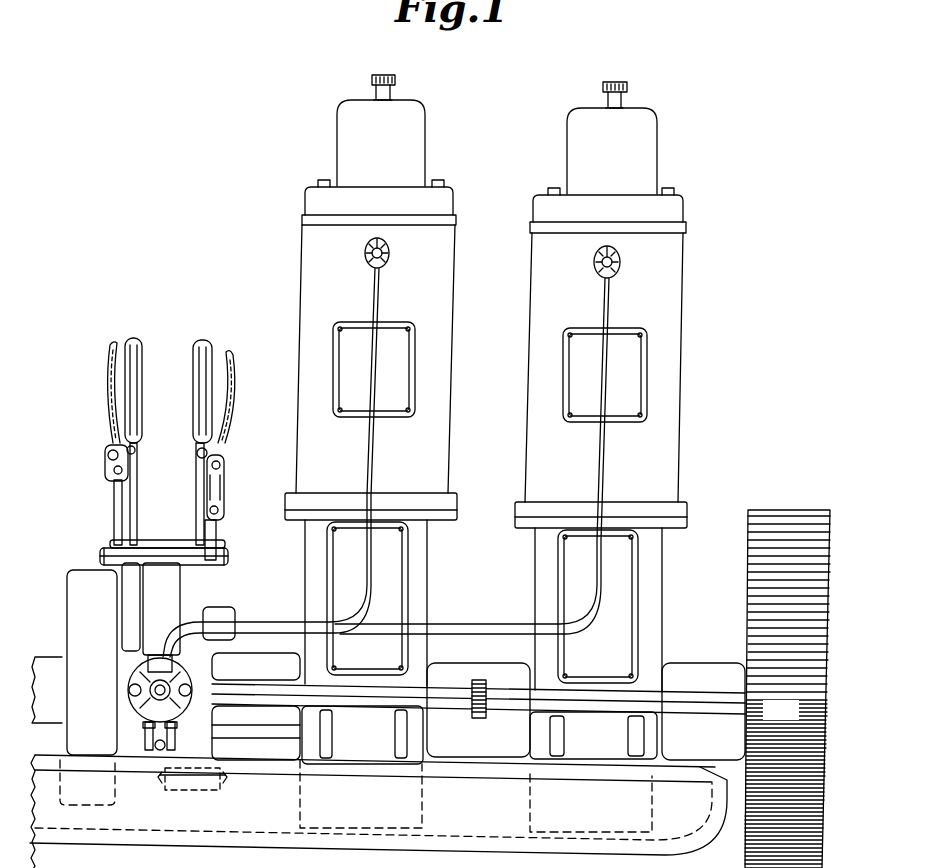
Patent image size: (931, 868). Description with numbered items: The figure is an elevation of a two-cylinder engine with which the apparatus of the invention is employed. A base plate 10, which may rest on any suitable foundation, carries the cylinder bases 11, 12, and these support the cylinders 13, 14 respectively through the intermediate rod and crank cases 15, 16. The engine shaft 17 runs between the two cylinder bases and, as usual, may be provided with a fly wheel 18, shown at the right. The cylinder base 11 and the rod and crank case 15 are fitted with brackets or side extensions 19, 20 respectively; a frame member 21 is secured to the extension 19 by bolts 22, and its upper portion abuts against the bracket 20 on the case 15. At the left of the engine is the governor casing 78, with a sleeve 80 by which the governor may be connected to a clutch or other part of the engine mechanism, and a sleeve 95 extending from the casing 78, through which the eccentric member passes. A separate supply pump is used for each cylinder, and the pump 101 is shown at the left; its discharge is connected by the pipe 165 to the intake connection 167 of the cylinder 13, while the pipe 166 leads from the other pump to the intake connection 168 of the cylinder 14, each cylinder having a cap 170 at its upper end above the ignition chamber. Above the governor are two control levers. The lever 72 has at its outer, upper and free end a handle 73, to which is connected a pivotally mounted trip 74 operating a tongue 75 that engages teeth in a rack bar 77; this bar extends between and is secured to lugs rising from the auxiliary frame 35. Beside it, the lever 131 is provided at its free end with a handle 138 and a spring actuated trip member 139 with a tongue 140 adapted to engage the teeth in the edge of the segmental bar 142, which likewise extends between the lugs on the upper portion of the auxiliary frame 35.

The cap 170 is at (497, 134).
The intake connection 167 is at (390, 256).
The intake connection 168 is at (620, 264).
The cylinder 13 is at (303, 312).
The cylinder 14 is at (676, 320).
The pipe 165 is at (368, 462).
The pipe 166 is at (601, 472).
The rod and crank case 15 is at (305, 572).
The rod and crank case 16 is at (648, 590).
The engine shaft 17 is at (480, 680).
The cylinder base 11 is at (418, 732).
The cylinder base 12 is at (540, 732).
The fly wheel 18 is at (787, 689).
The bracket or side extension 20 is at (252, 669).
The frame member 21 is at (214, 625).
The bolts 22 is at (220, 783).
The bracket or side extension 19 is at (211, 795).
The base plate 10 is at (606, 850).
The governor casing 78 is at (92, 662).
The sleeve 80 is at (45, 658).
The sleeve 95 is at (130, 648).
The auxiliary frame 35 is at (161, 609).
The pump 101 is at (152, 706).
The handle 138 is at (134, 380).
The spring actuated trip member 139 is at (110, 382).
The tongue 140 is at (110, 470).
The segmental bar 142 is at (116, 528).
The lever 131 is at (134, 522).
The handle 73 is at (205, 380).
The trip 74 is at (228, 392).
The tongue 75 is at (222, 512).
The lever 72 is at (197, 530).
The rack bar 77 is at (216, 540).